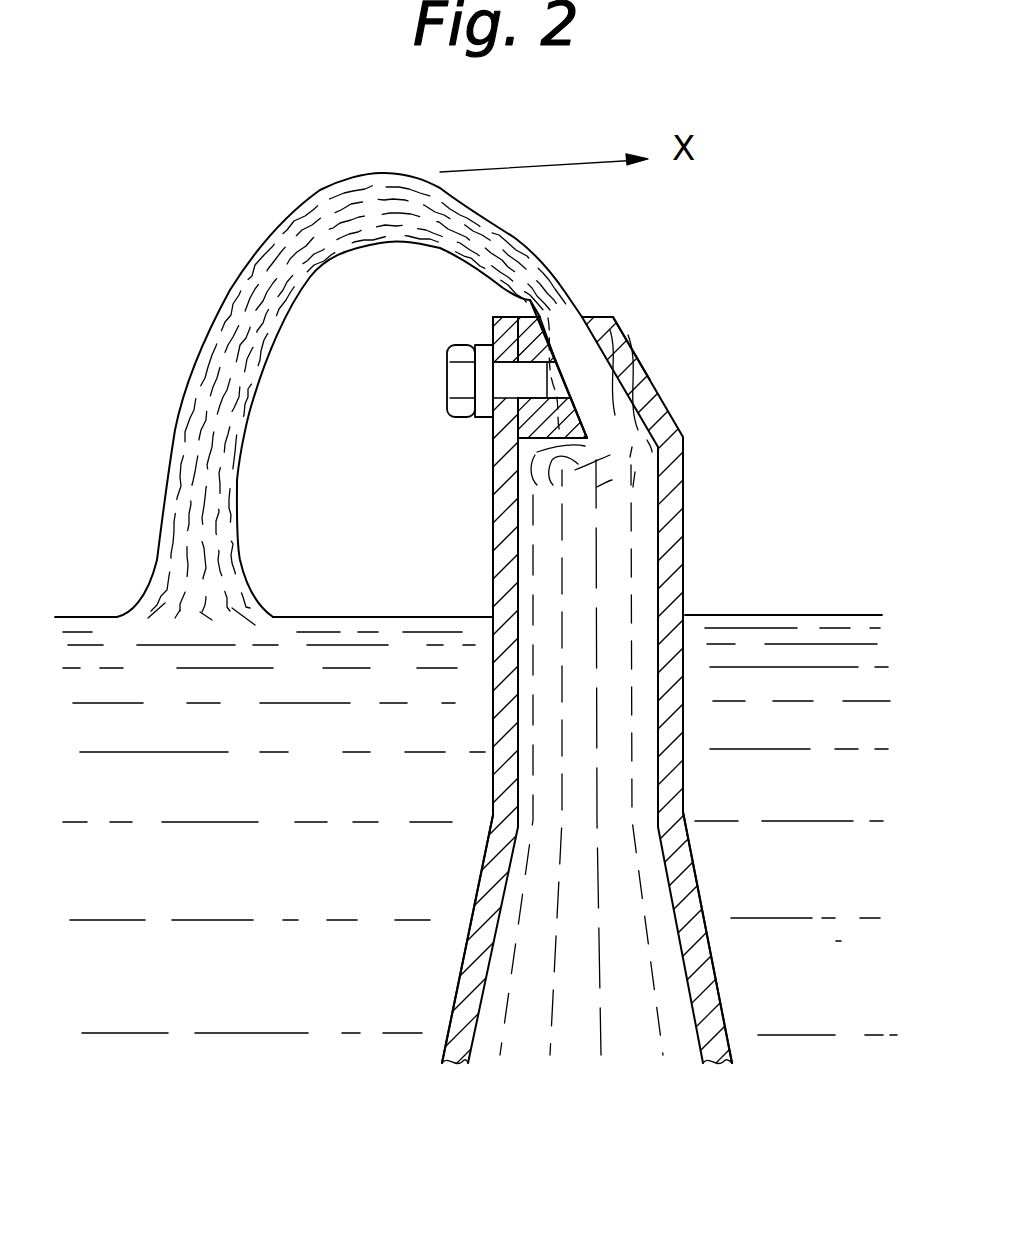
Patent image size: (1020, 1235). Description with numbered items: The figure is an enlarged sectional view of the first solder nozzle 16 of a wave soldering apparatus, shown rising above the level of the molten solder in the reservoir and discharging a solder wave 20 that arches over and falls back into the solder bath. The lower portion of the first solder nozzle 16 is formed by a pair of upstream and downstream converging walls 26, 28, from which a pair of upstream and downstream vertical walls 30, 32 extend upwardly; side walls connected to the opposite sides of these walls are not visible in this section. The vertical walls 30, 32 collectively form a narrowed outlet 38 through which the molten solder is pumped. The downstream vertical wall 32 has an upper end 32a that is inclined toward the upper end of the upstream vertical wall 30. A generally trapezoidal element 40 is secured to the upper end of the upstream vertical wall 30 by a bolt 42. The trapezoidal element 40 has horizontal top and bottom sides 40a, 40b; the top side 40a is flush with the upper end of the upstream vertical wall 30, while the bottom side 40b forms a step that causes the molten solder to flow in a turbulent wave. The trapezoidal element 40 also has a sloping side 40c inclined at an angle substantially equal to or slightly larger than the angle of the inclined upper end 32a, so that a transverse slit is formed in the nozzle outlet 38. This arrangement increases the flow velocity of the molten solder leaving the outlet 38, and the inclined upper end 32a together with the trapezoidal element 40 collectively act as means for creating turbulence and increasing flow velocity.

The first solder nozzle 16 is at (497, 540).
The solder wave 20 is at (243, 313).
The upstream converging wall 26 is at (467, 952).
The downstream converging wall 28 is at (713, 968).
The upstream vertical wall 30 is at (493, 505).
The downstream vertical wall 32 is at (683, 487).
The inclined upper end 32a is at (645, 365).
The narrowed outlet 38 is at (570, 305).
The trapezoidal element 40 is at (419, 717).
The top side 40a is at (530, 310).
The bottom side 40b is at (520, 452).
The sloping side 40c is at (582, 418).
The bolt 42 is at (447, 391).